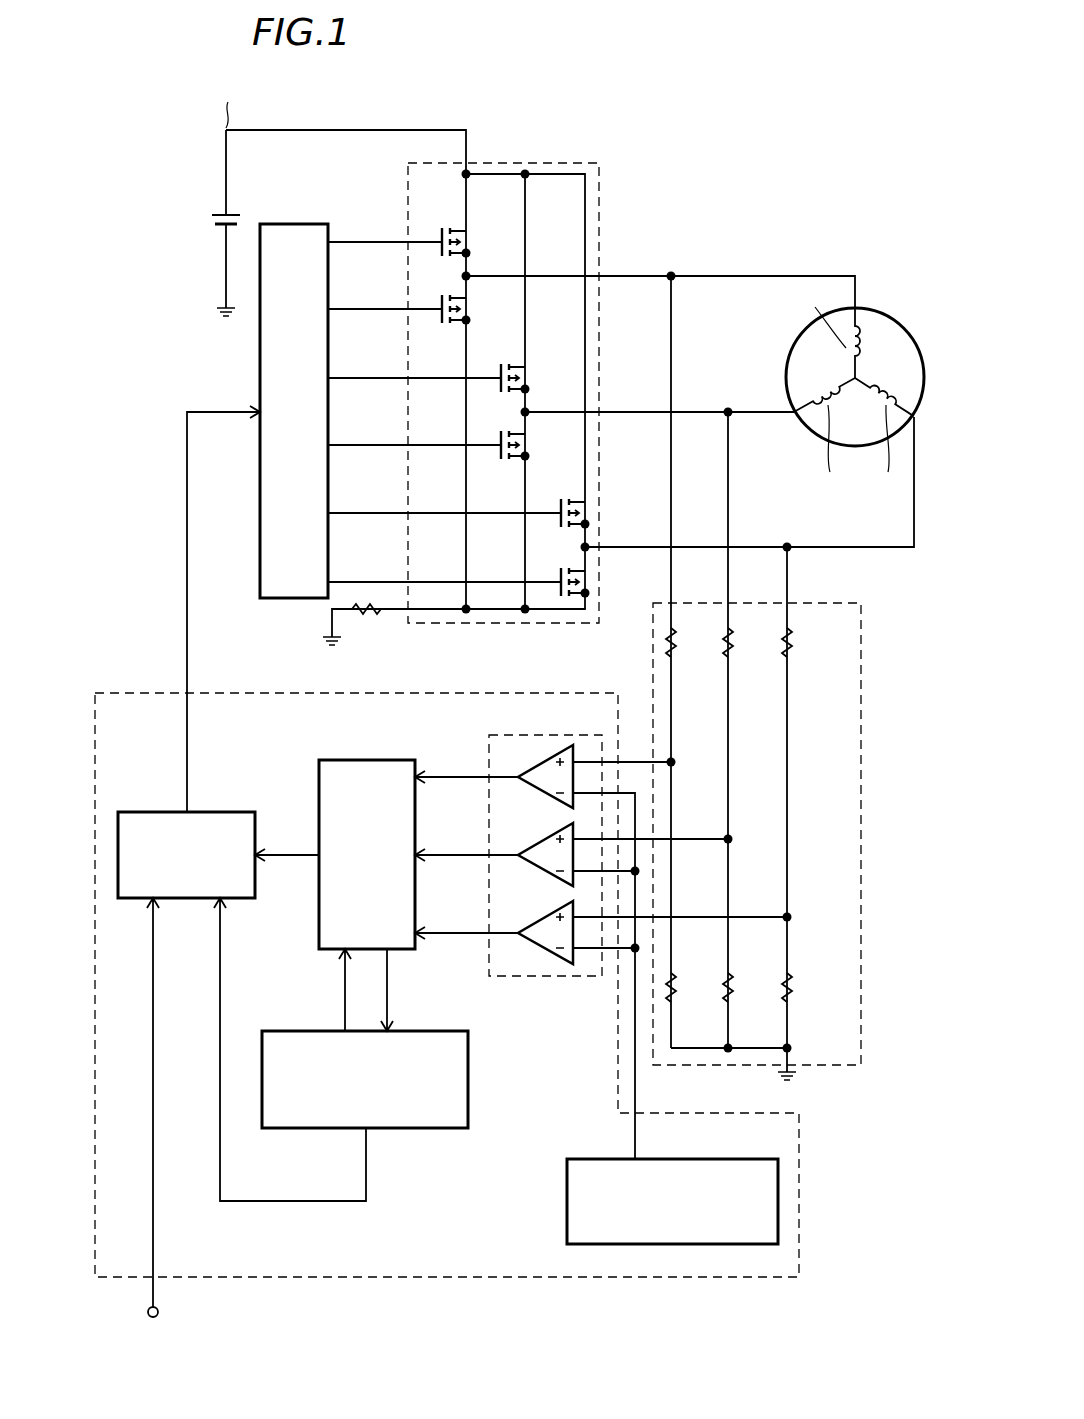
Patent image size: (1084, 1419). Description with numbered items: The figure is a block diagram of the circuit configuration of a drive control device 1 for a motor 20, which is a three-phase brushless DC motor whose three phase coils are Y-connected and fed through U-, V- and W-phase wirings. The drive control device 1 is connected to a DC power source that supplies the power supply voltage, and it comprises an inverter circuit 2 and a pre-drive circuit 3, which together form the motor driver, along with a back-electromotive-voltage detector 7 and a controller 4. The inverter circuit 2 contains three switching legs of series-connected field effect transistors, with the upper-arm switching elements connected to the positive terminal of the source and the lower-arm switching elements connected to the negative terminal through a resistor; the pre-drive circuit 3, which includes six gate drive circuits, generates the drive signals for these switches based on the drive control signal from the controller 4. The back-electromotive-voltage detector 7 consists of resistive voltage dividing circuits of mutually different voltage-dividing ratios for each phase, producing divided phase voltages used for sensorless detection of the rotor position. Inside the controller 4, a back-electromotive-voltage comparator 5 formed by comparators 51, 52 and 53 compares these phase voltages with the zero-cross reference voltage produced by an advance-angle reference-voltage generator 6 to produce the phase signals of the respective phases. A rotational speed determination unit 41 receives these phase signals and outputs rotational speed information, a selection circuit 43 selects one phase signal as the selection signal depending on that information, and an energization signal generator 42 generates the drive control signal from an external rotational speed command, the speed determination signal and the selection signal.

The drive control device 1 is at (665, 170).
The inverter circuit 2 is at (553, 163).
The pre-drive circuit 3 is at (294, 224).
The controller 4 is at (435, 1278).
The back-electromotive-voltage comparator 5 is at (555, 735).
The advance-angle reference-voltage generator 6 is at (722, 1159).
The back-electromotive-voltage detector 7 is at (862, 748).
The motor 20 is at (878, 310).
The rotational speed determination unit 41 is at (425, 1031).
The energization signal generator 42 is at (215, 812).
The selection circuit 43 is at (330, 760).
The comparator 51 is at (540, 765).
The comparator 52 is at (540, 843).
The comparator 53 is at (540, 921).